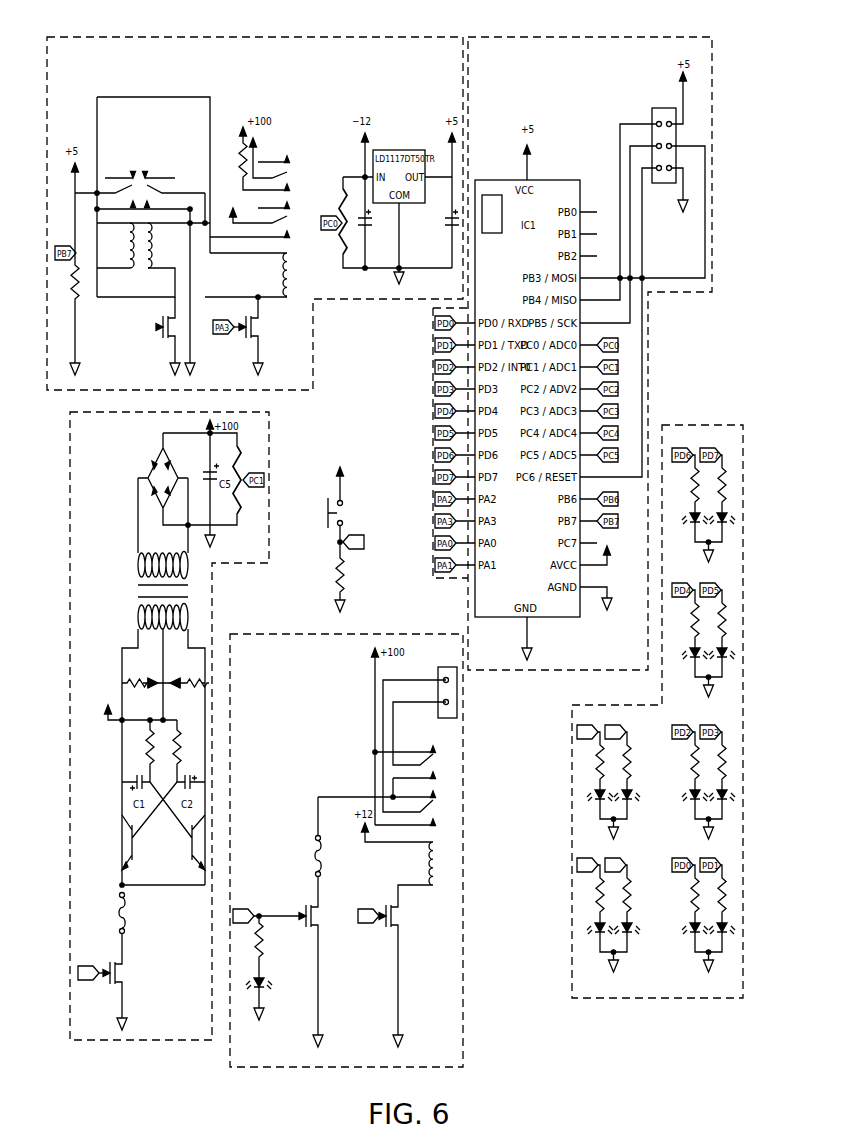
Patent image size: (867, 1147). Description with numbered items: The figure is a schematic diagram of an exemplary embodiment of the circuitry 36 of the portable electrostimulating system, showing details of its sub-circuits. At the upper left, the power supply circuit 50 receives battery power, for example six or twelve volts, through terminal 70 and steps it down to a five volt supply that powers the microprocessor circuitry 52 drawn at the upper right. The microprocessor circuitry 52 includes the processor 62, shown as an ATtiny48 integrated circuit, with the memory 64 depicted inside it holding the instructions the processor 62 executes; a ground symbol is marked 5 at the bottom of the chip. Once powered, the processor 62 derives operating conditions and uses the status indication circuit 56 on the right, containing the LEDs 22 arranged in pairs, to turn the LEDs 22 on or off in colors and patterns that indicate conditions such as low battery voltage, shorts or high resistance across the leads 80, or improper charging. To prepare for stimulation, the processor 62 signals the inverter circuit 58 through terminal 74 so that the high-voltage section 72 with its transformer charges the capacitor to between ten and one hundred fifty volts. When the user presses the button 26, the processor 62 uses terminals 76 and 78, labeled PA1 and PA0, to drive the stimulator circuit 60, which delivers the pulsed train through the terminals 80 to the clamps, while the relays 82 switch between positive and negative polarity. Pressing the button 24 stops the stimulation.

The power supply circuit 50 is at (250, 37).
The terminal 70 is at (213, 92).
The button 24 is at (154, 332).
The microprocessor circuitry 52 is at (590, 37).
The circuitry 36 is at (679, 27).
The processor 62 is at (553, 180).
The memory 64 is at (490, 195).
The ground 5 is at (532, 640).
The button 26 is at (354, 511).
The inverter circuit 58 is at (269, 488).
The high voltage supply circuit 72 is at (130, 444).
The terminal 74 is at (87, 965).
The stimulator circuit 60 is at (342, 634).
The terminals 80 is at (449, 718).
The relays 82 is at (450, 806).
The terminal 76 is at (245, 905).
The terminal 78 is at (370, 905).
The status indication circuit 56 is at (703, 425).
The LEDs 22 is at (680, 908).